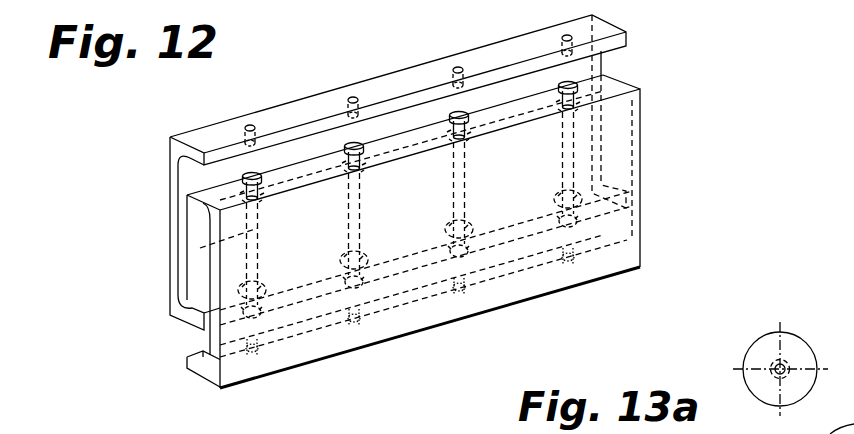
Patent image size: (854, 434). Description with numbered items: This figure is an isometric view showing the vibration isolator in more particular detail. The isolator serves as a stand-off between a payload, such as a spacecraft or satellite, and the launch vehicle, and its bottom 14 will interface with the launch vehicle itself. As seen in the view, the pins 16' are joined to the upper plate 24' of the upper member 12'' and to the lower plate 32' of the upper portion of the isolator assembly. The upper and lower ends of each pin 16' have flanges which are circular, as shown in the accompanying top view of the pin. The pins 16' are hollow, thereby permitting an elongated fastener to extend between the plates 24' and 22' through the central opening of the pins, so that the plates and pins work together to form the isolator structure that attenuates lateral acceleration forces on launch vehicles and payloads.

The upper member 12'' is at (398, 90).
The bottom 14 is at (637, 211).
The upper plate 24' is at (340, 187).
The pin 16' is at (168, 256).
The lower plate 32' is at (352, 185).
The plate 22' is at (149, 375).